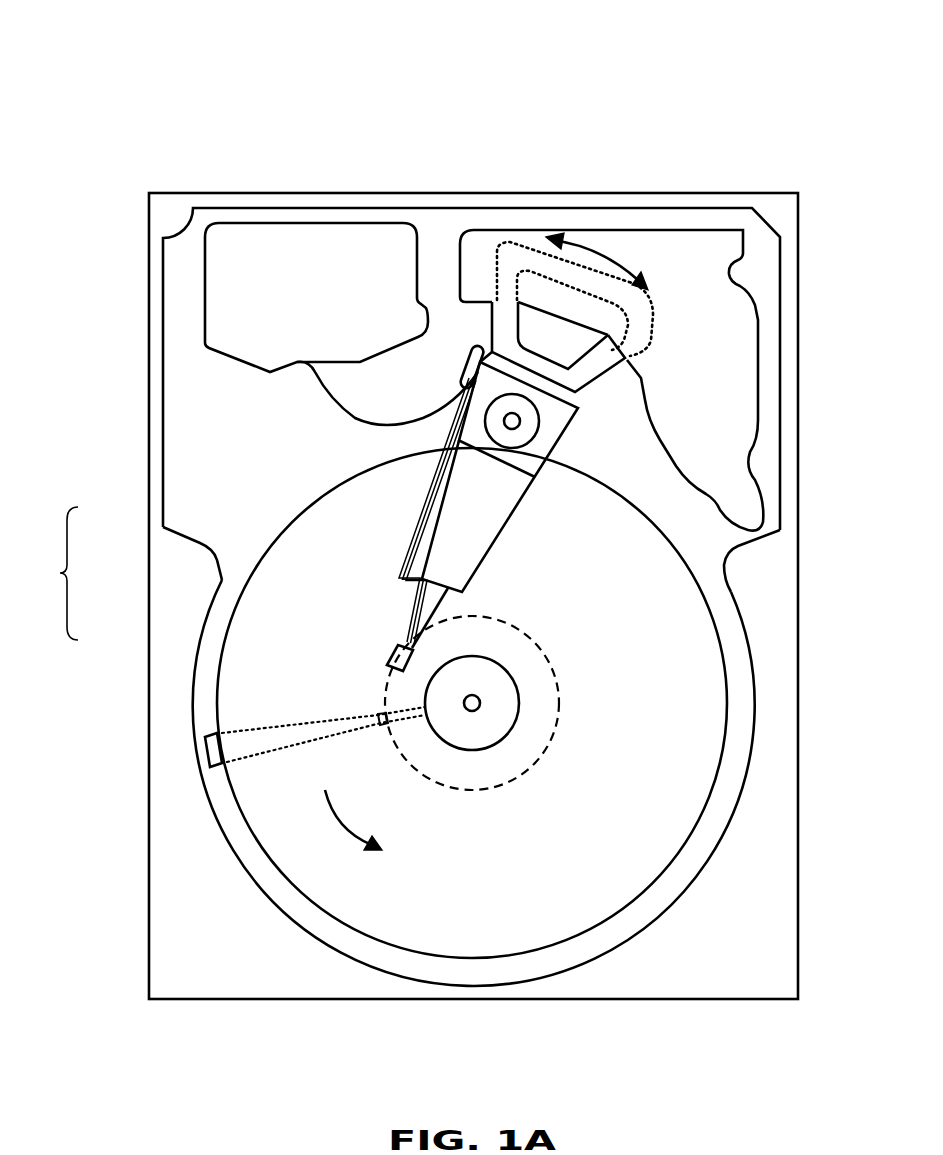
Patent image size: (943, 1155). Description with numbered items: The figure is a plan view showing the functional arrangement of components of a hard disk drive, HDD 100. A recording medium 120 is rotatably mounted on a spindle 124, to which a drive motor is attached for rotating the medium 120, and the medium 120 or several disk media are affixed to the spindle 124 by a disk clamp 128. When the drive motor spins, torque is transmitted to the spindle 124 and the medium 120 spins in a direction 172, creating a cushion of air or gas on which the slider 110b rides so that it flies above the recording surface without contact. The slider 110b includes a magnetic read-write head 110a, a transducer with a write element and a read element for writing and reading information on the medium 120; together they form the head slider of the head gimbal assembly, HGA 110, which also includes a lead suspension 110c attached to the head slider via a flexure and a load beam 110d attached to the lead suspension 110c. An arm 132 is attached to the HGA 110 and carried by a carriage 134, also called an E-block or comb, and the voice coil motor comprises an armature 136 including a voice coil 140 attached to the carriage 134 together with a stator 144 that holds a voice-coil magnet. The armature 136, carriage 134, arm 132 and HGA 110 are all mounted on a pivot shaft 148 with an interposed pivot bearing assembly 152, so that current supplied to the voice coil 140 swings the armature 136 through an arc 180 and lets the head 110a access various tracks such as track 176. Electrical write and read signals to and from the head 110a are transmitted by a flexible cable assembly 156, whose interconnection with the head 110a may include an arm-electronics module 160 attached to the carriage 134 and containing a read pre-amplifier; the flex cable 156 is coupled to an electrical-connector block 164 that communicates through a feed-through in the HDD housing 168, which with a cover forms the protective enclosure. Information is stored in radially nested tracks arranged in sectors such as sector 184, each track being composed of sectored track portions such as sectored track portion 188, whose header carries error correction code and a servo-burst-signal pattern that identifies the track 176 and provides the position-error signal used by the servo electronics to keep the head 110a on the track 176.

The hard disk drive 100 is at (74, 66).
The head gimbal assembly 110 is at (45, 573).
The magnetic read-write head 110a is at (386, 674).
The slider 110b is at (406, 636).
The lead suspension 110c is at (408, 612).
The load beam 110d is at (403, 577).
The recording medium 120 is at (655, 653).
The spindle 124 is at (478, 703).
The disk clamp 128 is at (500, 722).
The arm 132 is at (462, 537).
The carriage 134 is at (532, 453).
The armature 136 is at (487, 338).
The voice coil 140 is at (507, 312).
The stator 144 is at (725, 323).
The pivot shaft 148 is at (520, 419).
The pivot bearing assembly 152 is at (527, 433).
The flexible cable assembly 156 is at (330, 397).
The arm-electronics module 160 is at (463, 388).
The electrical-connector block 164 is at (230, 295).
The HDD housing 168 is at (776, 207).
The direction of spin 172 is at (372, 828).
The track 176 is at (553, 660).
The arc 180 is at (595, 248).
The sector 184 is at (203, 750).
The sectored track portion 188 is at (378, 716).